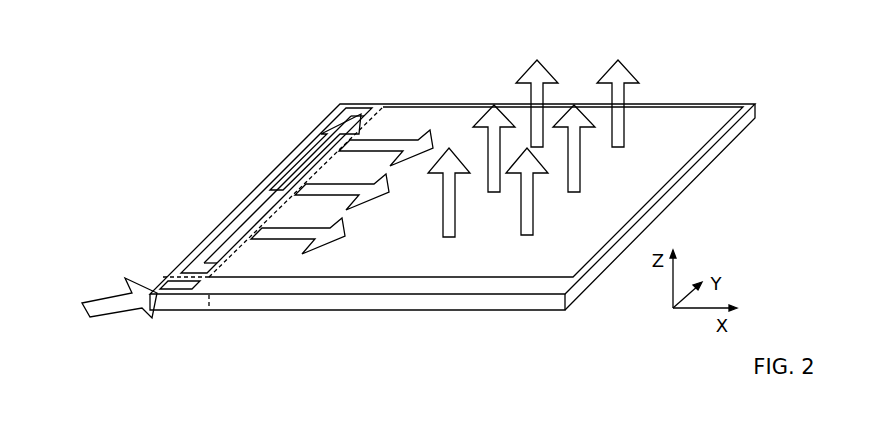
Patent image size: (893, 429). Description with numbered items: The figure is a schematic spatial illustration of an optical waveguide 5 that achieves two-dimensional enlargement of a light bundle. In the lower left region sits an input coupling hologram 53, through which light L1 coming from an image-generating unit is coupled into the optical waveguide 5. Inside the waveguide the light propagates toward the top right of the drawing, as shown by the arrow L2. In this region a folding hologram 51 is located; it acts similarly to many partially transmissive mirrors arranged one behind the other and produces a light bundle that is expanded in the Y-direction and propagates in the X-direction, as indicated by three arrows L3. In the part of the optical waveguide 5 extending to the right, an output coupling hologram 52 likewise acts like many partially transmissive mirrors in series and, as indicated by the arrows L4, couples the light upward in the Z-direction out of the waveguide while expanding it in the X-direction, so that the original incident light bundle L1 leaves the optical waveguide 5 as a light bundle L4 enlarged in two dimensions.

The optical waveguide 5 is at (758, 110).
The folding hologram 51 is at (348, 113).
The output coupling hologram 52 is at (502, 268).
The input coupling hologram 53 is at (183, 287).
The light coming from an image-generating unit L1 is at (112, 305).
The arrow indicating light propagation L2 is at (282, 188).
The arrows indicating expanded light bundle L3 is at (412, 140).
The output light bundle L4 is at (540, 78).